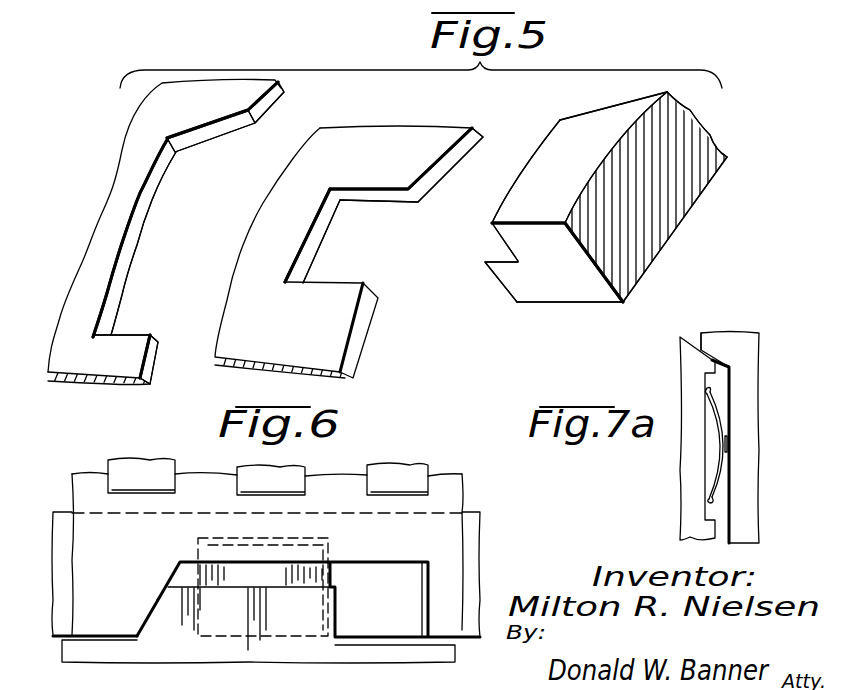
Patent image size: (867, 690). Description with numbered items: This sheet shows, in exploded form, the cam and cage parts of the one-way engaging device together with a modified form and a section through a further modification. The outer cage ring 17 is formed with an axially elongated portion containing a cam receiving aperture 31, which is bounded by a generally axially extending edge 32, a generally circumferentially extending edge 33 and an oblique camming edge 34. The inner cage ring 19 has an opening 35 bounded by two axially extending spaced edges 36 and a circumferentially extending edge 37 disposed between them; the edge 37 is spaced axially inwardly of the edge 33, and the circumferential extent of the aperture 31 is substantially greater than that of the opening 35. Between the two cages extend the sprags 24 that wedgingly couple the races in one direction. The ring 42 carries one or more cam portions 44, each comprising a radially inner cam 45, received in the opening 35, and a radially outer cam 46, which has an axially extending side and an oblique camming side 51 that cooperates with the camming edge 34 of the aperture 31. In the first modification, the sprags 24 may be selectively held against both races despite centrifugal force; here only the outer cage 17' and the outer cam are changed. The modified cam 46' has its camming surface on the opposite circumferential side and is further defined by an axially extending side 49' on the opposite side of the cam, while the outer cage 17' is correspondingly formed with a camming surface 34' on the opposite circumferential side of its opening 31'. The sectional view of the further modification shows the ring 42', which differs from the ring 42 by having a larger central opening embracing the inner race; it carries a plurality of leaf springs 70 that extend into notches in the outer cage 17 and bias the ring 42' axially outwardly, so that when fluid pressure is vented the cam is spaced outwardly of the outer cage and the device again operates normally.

In FIG. 5, the outer cage ring 17 is at (164, 235).
In FIG. 7A, the outer cage ring 17 is at (680, 438).
In FIG. 6, the outer cage 17' is at (266, 538).
In FIG. 5, the inner cage ring 19 is at (364, 327).
In FIG. 6, the inner cage ring 19 is at (283, 565).
In FIG. 6, the sprags 24 is at (240, 466).
In FIG. 5, the cam receiving aperture 31 is at (188, 233).
In FIG. 6, the opening 31' is at (430, 583).
In FIG. 5, the axially extending edge 32 is at (133, 336).
In FIG. 5, the circumferentially extending edge 33 is at (148, 206).
In FIG. 5, the oblique camming edge 34 is at (225, 127).
In FIG. 6, the camming surface 34' is at (302, 592).
In FIG. 5, the opening 35 is at (372, 245).
In FIG. 6, the opening 35 is at (293, 532).
In FIG. 5, the axially extending spaced edges 36 is at (368, 192).
In FIG. 5, the circumferentially extending edge 37 is at (312, 244).
In FIG. 5, the ring 42 is at (646, 195).
In FIG. 6, the ring 42 is at (258, 664).
In FIG. 7A, the ring 42' is at (754, 438).
In FIG. 5, the cam portions 44 is at (568, 312).
In FIG. 5, the radially inner cam 45 is at (486, 248).
In FIG. 6, the radially inner cam 45 is at (331, 574).
In FIG. 5, the radially outer cam 46 is at (579, 157).
In FIG. 7A, the radially outer cam 46 is at (721, 328).
In FIG. 6, the cam 46' is at (136, 599).
In FIG. 6, the axially extending side 49' is at (359, 612).
In FIG. 5, the oblique camming side 51 is at (605, 108).
In FIG. 6, the oblique camming side 51 is at (158, 596).
In FIG. 7A, the leaf springs 70 is at (711, 475).